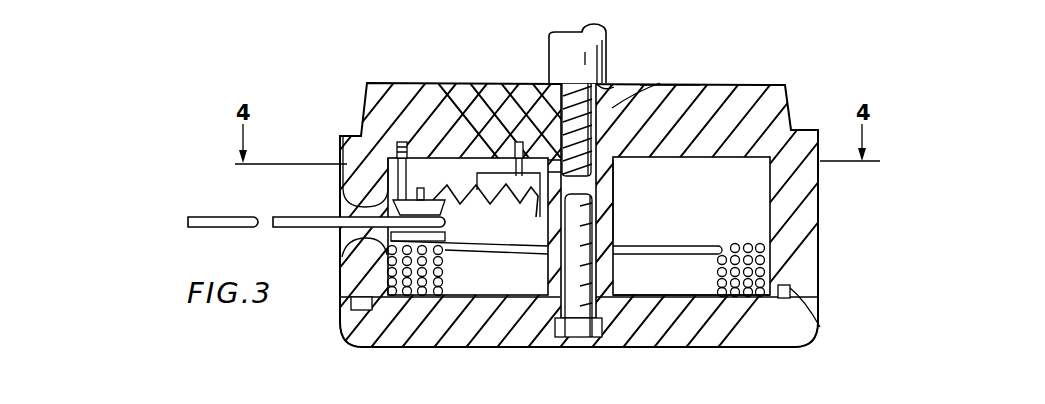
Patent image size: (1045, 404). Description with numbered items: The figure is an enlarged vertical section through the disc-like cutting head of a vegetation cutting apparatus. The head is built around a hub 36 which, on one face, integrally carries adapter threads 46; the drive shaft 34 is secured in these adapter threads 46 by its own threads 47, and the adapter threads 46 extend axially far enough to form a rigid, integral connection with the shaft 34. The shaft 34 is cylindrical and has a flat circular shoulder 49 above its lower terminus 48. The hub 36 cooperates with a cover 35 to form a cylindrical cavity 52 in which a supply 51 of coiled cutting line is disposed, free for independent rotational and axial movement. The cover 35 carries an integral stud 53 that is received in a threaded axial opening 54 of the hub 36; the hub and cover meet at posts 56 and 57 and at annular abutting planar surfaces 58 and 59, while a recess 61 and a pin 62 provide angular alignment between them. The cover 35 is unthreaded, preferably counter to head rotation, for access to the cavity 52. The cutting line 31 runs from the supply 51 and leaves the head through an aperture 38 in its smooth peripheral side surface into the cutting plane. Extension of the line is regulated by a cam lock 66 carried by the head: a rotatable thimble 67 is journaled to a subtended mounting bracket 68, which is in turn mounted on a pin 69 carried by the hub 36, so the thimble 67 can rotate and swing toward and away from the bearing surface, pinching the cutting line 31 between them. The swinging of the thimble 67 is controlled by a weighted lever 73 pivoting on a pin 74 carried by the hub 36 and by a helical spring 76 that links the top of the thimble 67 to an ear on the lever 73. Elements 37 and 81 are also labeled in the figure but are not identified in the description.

The cutting line 31 is at (207, 229).
The drive shaft 34 is at (600, 48).
The cover 35 is at (820, 325).
The hub 36 is at (818, 203).
The housing body 37 is at (737, 92).
The aperture 38 is at (352, 208).
The adapter threads 46 is at (660, 84).
The threads 47 is at (565, 105).
The lower terminus 48 is at (558, 148).
The flat circular shoulder 49 is at (594, 103).
The supply of coiled cutting line 51 is at (722, 274).
The cylindrical cavity 52 is at (750, 194).
The stud 53 is at (585, 322).
The threaded axial opening 54 is at (599, 230).
The post 56 is at (615, 181).
The post 57 is at (613, 278).
The annular abutting planar surface 58 is at (807, 344).
The annular abutting planar surface 59 is at (342, 286).
The recess 61 is at (795, 292).
The pin 62 is at (344, 322).
The cam lock 66 is at (448, 272).
The rotatable thimble 67 is at (393, 203).
The mounting bracket 68 is at (345, 233).
The pin 69 is at (398, 147).
The weighted lever 73 is at (485, 212).
The pin 74 is at (540, 165).
The helical spring 76 is at (462, 205).
The spring retainer 81 is at (508, 207).